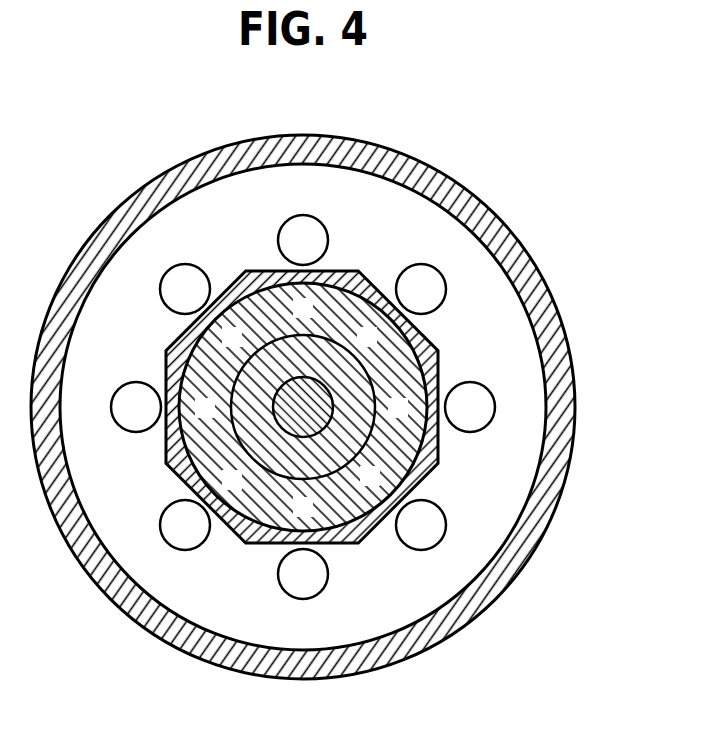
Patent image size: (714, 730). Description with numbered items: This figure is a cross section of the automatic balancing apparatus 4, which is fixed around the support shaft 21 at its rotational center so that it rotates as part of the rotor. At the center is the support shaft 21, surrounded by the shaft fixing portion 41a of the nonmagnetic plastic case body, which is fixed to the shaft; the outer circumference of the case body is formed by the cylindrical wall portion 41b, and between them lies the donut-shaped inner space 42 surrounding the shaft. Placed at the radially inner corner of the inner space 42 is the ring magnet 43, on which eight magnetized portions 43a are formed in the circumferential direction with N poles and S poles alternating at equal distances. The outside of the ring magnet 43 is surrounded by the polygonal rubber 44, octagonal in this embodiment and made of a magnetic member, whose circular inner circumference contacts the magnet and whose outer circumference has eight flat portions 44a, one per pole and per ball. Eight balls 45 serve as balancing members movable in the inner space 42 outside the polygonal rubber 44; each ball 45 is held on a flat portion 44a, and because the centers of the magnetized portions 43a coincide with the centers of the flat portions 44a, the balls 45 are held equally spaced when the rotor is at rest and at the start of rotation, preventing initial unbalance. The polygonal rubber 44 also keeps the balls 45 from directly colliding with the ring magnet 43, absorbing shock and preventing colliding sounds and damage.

The automatic balancing apparatus 4 is at (494, 152).
The support shaft 21 is at (288, 432).
The shaft fixing portion 41a is at (278, 352).
The wall portion 41b is at (289, 136).
The inner space 42 is at (130, 260).
The ring magnet 43 is at (432, 345).
The magnetized portion 43a is at (367, 322).
The polygonal rubber 44 is at (430, 472).
The flat portion 44a is at (338, 285).
The ball 45 is at (289, 219).